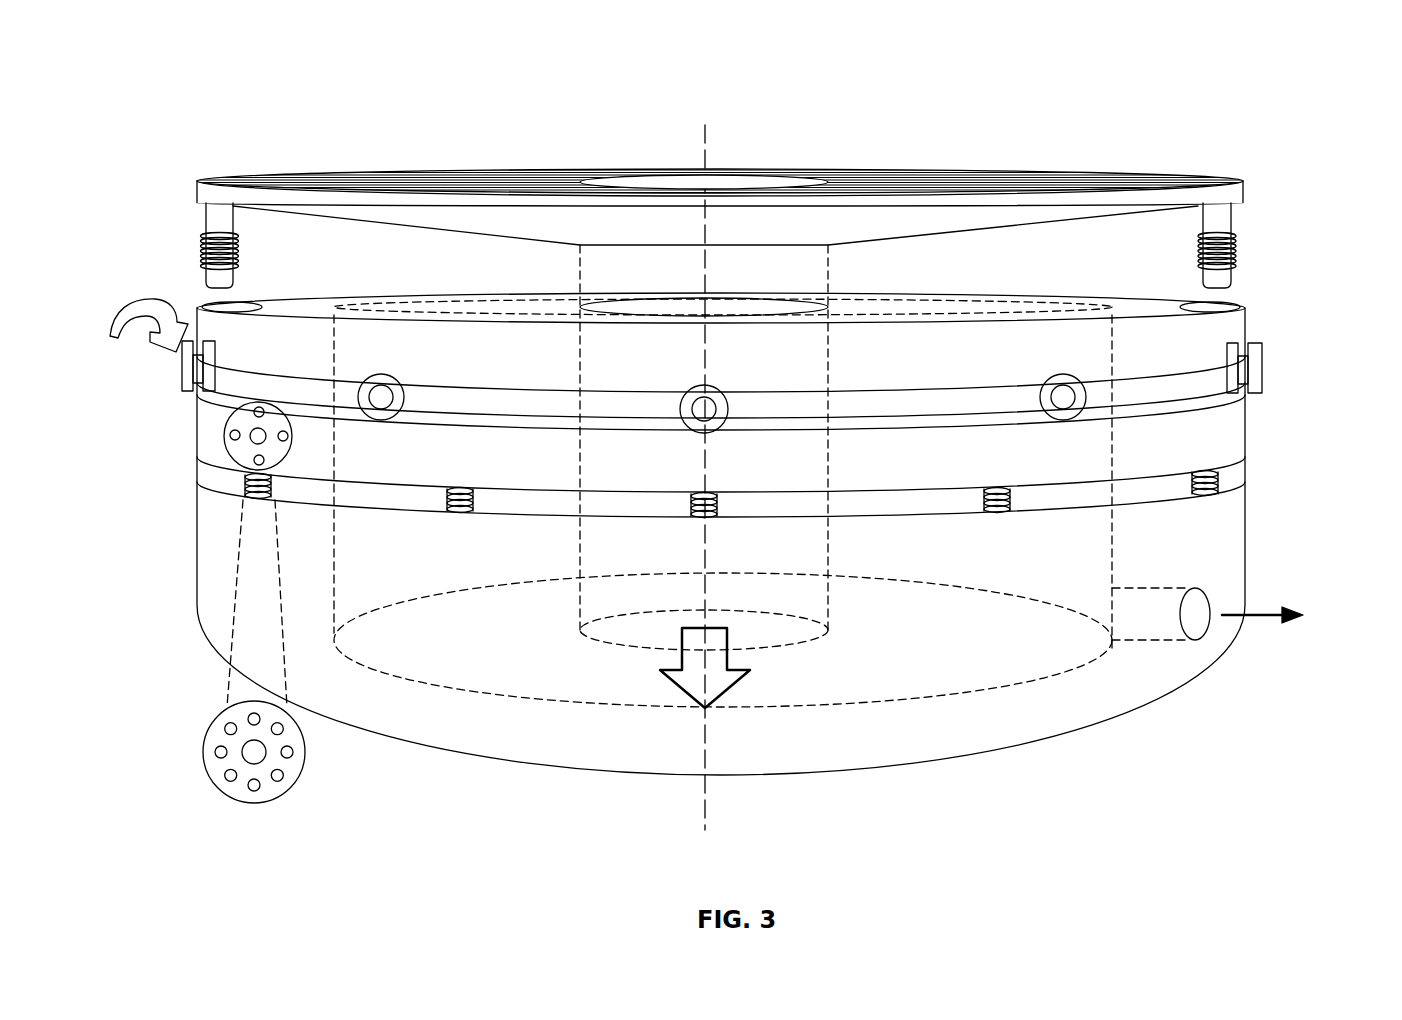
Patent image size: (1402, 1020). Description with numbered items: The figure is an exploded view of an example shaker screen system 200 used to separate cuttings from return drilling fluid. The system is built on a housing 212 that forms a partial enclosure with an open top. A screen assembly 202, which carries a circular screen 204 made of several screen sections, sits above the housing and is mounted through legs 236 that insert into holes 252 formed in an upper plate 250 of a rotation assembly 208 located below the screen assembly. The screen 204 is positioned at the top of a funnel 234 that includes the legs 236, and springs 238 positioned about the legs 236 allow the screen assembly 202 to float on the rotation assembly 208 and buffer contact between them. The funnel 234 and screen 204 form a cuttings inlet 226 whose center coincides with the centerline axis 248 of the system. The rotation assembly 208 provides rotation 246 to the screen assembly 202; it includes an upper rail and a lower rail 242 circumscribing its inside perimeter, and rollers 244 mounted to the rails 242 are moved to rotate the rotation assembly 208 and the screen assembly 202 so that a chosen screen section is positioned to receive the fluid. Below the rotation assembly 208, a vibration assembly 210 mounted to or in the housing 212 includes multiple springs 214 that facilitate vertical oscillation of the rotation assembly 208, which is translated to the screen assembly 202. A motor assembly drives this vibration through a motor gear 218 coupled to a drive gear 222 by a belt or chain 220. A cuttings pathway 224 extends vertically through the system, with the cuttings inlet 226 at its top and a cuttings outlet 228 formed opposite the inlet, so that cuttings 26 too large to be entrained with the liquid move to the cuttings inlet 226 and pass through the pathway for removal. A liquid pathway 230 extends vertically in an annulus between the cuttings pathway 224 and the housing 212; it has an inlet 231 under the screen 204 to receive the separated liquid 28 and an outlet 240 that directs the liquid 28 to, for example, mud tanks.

The shaker screen system 200 is at (1285, 84).
The screen assembly 202 is at (762, 157).
The screen 204 is at (1064, 178).
The rotation assembly 208 is at (772, 392).
The vibration assembly 210 is at (1277, 395).
The housing 212 is at (762, 530).
The springs 214 is at (462, 522).
The motor gear 218 is at (203, 750).
The belt or chain 220 is at (227, 673).
The drive gear 222 is at (222, 436).
The cuttings pathway 224 is at (828, 562).
The cuttings inlet 226 is at (798, 302).
The cuttings outlet 228 is at (808, 642).
The liquid pathway 230 is at (845, 471).
The inlet 231 is at (413, 310).
The funnel 234 is at (1096, 218).
The legs 236 is at (718, 245).
The springs 238 is at (1278, 268).
The outlet 240 is at (1147, 587).
The rails 242 is at (721, 416).
The rollers 244 is at (1043, 384).
The rotation 246 is at (133, 357).
The centerline axis 248 is at (705, 140).
The upper plate 250 is at (1233, 318).
The holes 252 is at (233, 307).
The cuttings 26 is at (727, 688).
The liquid 28 is at (1263, 617).